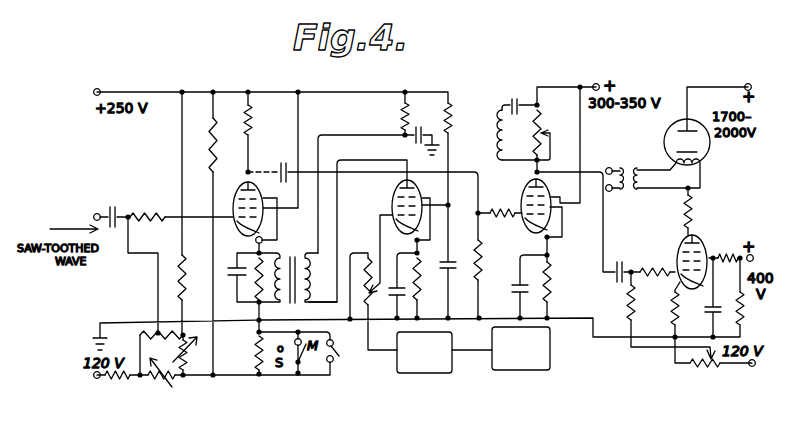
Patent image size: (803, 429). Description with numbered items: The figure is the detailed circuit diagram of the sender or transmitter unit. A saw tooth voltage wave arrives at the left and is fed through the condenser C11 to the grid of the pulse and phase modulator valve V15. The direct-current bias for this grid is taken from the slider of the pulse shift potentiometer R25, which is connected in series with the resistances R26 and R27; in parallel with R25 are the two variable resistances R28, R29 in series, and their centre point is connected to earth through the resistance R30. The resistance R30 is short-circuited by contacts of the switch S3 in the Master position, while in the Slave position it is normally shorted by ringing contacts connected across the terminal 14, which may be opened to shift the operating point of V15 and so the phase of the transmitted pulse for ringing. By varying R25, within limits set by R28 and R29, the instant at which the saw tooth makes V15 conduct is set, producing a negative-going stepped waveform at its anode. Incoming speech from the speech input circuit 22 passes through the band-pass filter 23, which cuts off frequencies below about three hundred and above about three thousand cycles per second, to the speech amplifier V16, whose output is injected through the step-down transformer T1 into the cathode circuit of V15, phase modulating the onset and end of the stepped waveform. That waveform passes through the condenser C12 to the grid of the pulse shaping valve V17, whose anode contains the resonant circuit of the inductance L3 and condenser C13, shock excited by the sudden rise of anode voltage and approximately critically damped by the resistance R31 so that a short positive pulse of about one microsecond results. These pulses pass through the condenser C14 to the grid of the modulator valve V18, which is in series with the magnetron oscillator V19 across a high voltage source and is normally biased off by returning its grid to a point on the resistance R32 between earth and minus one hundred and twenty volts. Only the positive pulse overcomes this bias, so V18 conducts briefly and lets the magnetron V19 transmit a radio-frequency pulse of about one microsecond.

The condenser C11 is at (117, 202).
The condenser C12 is at (281, 164).
The condenser of resonant circuit C13 is at (511, 103).
The condenser C14 is at (624, 268).
The potentiometer R25 is at (153, 330).
The resistance R26 is at (216, 140).
The resistance R27 is at (117, 380).
The variable resistance R28 is at (188, 382).
The variable resistance R29 is at (163, 382).
The resistance R30 is at (256, 356).
The damping resistance R31 is at (553, 131).
The bias resistance R32 is at (702, 368).
The pulse and phase modulator valve V15 is at (236, 188).
The speech amplifier V16 is at (392, 199).
The pulse shaping valve V17 is at (522, 191).
The modulator valve V18 is at (705, 248).
The magnetron oscillator V19 is at (705, 154).
The inductance of resonant circuit L3 is at (497, 144).
The step-down transformer T1 is at (291, 256).
The switch S3 is at (300, 378).
The terminal 14 is at (345, 357).
The speech input circuit 22 is at (513, 371).
The band-pass filter 23 is at (418, 374).